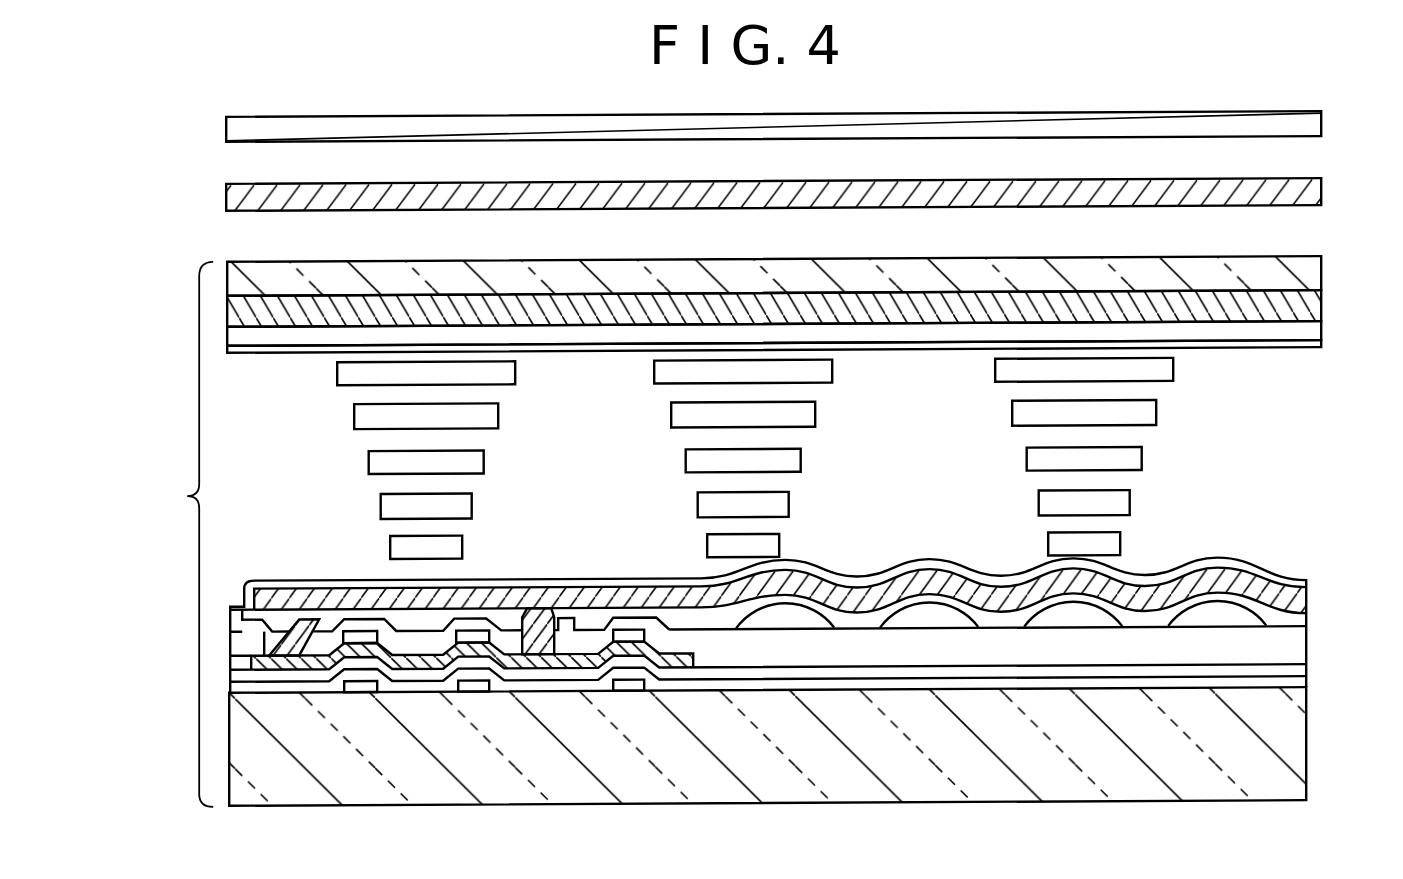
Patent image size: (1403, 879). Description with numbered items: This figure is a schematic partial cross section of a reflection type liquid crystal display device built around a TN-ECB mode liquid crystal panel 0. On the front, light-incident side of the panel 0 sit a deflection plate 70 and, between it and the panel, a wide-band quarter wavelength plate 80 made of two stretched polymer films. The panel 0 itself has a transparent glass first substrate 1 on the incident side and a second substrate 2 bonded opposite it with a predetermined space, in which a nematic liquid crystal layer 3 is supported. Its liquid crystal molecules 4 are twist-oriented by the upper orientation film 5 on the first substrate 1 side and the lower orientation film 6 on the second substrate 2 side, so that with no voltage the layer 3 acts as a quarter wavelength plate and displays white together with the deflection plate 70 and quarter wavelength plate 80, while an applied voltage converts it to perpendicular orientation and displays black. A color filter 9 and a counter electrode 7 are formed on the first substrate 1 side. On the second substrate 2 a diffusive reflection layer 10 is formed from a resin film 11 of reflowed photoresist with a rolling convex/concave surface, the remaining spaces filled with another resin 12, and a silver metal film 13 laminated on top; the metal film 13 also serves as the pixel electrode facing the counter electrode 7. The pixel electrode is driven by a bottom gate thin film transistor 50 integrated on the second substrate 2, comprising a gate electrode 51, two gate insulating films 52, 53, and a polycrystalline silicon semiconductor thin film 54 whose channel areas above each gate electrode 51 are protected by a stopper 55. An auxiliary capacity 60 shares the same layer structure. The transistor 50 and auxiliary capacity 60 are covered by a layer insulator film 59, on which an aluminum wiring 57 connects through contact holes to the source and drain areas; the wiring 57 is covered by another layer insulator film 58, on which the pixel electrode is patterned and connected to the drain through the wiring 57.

The deflection plate 70 is at (1322, 129).
The quarter wavelength plate 80 is at (1322, 198).
The liquid crystal panel 0 is at (773, 555).
The first substrate 1 is at (1325, 278).
The color filter 9 is at (1322, 318).
The counter electrode 7 is at (1313, 336).
The orientation film 5 is at (1300, 352).
The nematic liquid crystal layer 3 is at (804, 458).
The liquid crystal molecules 4 is at (1172, 377).
The diffusive reflection layer 10 is at (801, 675).
The orientation film 6 is at (1262, 581).
The metal film 13 is at (1207, 575).
The resin film 11 is at (1218, 623).
The resin 12 is at (1165, 619).
The layer insulator film 59 is at (1287, 657).
The stopper 55 is at (325, 614).
The layer insulator film 58 is at (392, 619).
The wiring 57 is at (243, 607).
The semiconductor thin film 54 is at (668, 634).
The thin film transistor 50 is at (491, 726).
The gate insulating film 53 is at (956, 673).
The gate insulating film 52 is at (826, 691).
The gate electrode 51 is at (357, 696).
The auxiliary capacity 60 is at (625, 712).
The second substrate 2 is at (1296, 774).